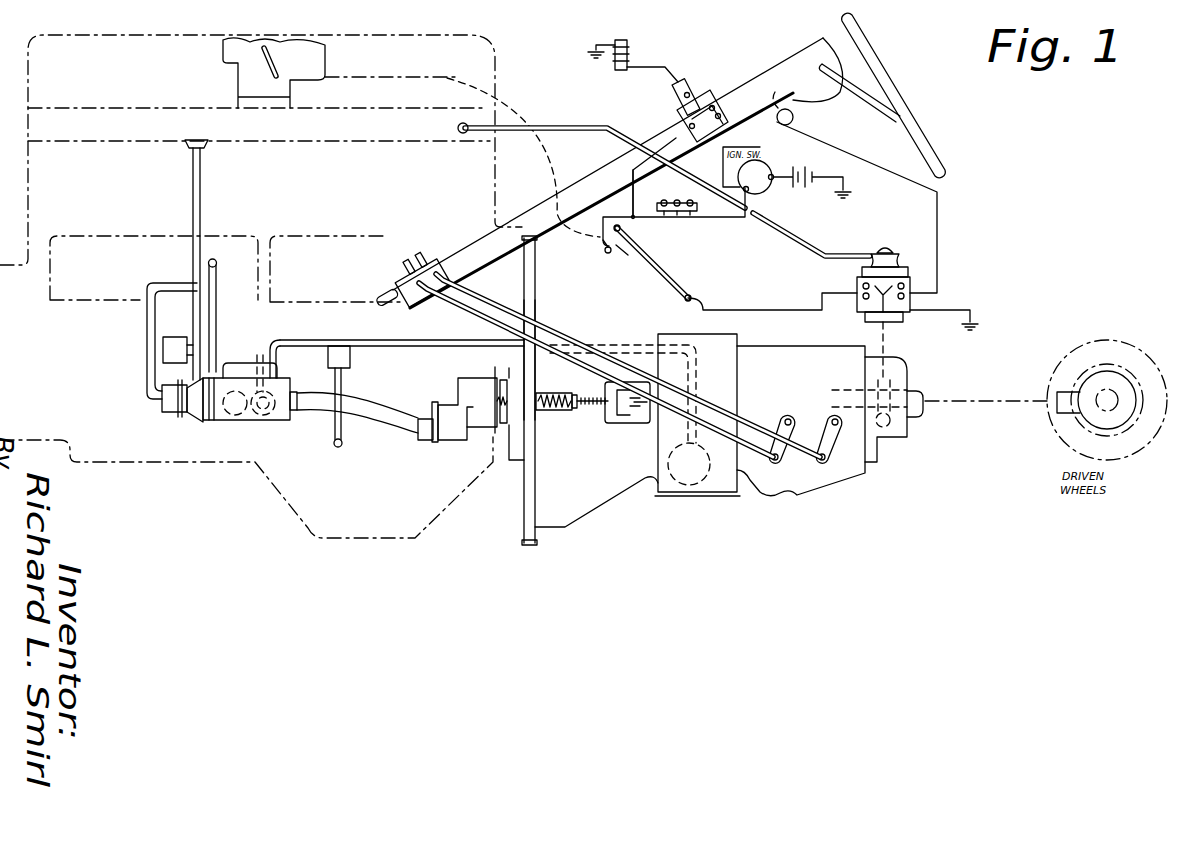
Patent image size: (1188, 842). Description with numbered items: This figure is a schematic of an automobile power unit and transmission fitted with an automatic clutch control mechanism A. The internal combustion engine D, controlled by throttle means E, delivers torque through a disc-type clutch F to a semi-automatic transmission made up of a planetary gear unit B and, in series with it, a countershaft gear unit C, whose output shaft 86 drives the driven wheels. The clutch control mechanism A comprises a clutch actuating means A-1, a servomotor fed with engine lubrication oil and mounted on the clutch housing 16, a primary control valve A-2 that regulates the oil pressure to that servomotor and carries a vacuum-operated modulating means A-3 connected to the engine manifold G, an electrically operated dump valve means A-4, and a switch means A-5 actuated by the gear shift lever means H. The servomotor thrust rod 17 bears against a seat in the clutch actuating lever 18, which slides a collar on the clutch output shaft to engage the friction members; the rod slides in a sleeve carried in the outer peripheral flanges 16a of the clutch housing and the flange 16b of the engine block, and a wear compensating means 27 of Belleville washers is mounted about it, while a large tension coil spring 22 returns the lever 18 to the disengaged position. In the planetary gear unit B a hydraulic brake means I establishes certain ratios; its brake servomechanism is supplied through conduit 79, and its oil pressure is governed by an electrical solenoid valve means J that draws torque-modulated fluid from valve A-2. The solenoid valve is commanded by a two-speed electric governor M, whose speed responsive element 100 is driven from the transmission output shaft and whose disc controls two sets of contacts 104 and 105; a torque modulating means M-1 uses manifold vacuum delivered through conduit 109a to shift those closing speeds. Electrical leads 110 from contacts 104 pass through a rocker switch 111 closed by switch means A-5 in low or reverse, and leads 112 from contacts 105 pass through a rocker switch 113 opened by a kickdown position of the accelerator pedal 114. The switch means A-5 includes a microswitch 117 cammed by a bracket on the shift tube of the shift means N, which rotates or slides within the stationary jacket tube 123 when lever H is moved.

The internal combustion engine D is at (502, 60).
The automatic clutch control mechanism A is at (400, 443).
The clutch actuating means A-1 is at (482, 432).
The primary control valve A-2 is at (244, 424).
The vacuum-operated modulating means A-3 is at (165, 412).
The electrically operated dump valve means A-4 is at (170, 332).
The switch means A-5 is at (705, 76).
The planetary gear unit B is at (712, 497).
The countershaft gear unit C is at (845, 488).
The throttle means E is at (685, 278).
The disc-type clutch F is at (540, 535).
The engine manifold G is at (122, 143).
The gear shift lever means H is at (796, 118).
The hydraulic brake means I is at (688, 475).
The electrical solenoid valve means J is at (352, 360).
The two-speed electric governor M is at (915, 276).
The torque modulating means M-1 is at (885, 248).
The shift means N is at (410, 272).
The clutch housing 16 is at (611, 494).
The outer peripheral flanges of clutch housing 16a is at (527, 530).
The flange of engine block 16b is at (498, 472).
The thrust rod 17 is at (590, 408).
The clutch actuating lever 18 is at (622, 424).
The tension coil spring 22 is at (555, 378).
The wear compensating means 27 is at (552, 412).
The conduit 79 is at (388, 340).
The output shaft 86 is at (920, 412).
The speed responsive element 100 is at (888, 342).
The first set of electrical contacts 104 is at (912, 289).
The second set of electrical contacts 105 is at (855, 290).
The conduit 109a is at (556, 126).
The electrical leads 110 is at (937, 186).
The rocker switch 111 is at (690, 118).
The electrical leads 112 is at (633, 185).
The rocker switch 113 is at (622, 262).
The accelerator pedal 114 is at (704, 312).
The microswitch 117 is at (678, 78).
The stationary jacket tube 123 is at (495, 262).